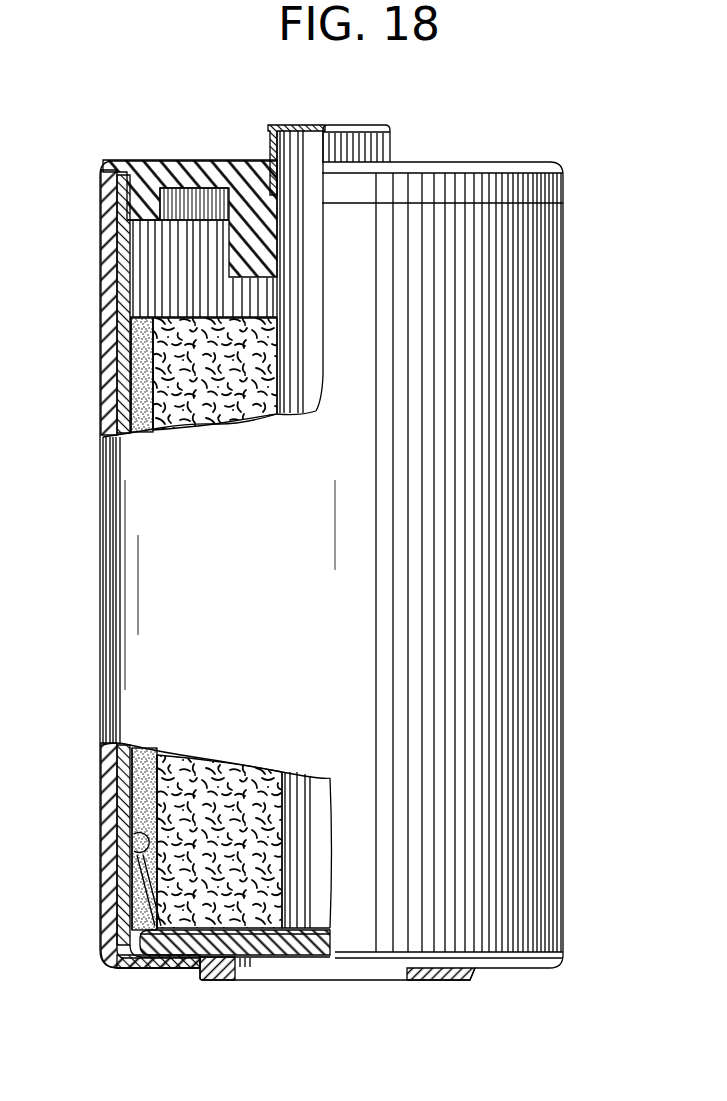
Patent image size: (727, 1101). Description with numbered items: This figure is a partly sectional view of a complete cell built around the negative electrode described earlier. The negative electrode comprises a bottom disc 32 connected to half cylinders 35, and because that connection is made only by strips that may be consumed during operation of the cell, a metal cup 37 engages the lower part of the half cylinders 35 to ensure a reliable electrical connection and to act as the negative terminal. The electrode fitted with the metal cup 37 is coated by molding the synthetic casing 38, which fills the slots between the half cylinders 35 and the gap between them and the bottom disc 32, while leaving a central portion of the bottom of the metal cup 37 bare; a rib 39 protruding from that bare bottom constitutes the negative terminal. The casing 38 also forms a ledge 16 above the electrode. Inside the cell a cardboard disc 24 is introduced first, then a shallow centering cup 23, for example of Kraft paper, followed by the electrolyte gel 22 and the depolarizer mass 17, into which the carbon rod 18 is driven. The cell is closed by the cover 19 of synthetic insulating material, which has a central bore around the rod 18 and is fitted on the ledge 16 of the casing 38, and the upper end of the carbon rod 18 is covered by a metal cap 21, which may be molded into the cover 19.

The ledge 16 is at (102, 212).
The depolarizer mass 17 is at (250, 358).
The carbon rod 18 is at (307, 168).
The cover 19 is at (115, 177).
The metal cap 21 is at (283, 126).
The electrolyte gel 22 is at (133, 383).
The centering cup 23 is at (123, 826).
The cardboard disc 24 is at (118, 886).
The bottom disc 32 is at (280, 950).
The half cylinders 35 is at (118, 340).
The metal cup 37 is at (117, 923).
The synthetic casing 38 is at (112, 762).
The rib 39 is at (250, 985).